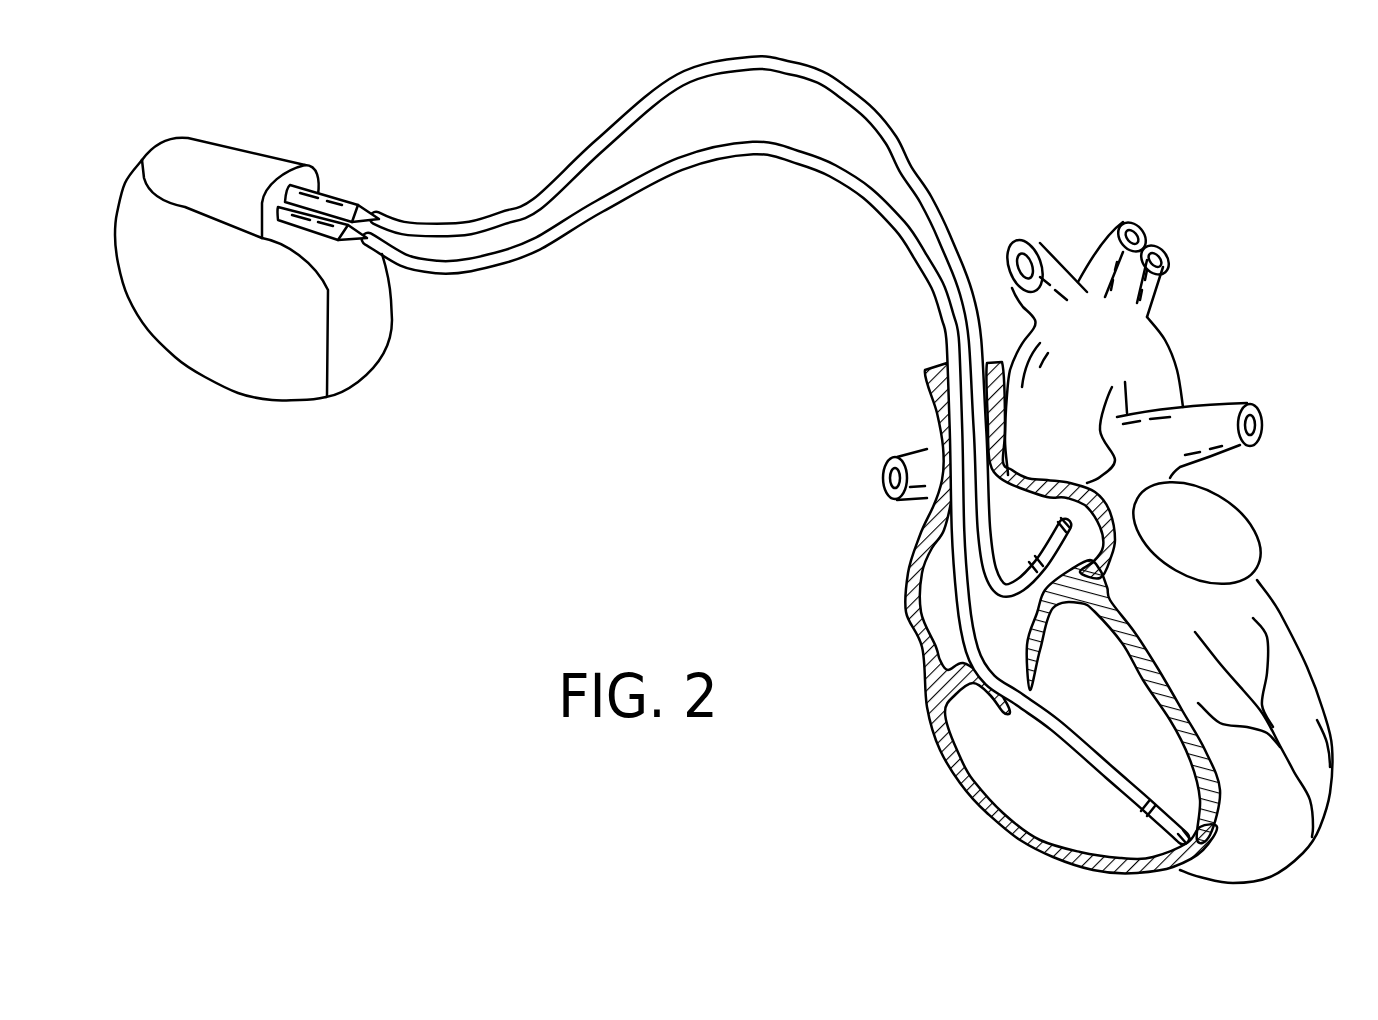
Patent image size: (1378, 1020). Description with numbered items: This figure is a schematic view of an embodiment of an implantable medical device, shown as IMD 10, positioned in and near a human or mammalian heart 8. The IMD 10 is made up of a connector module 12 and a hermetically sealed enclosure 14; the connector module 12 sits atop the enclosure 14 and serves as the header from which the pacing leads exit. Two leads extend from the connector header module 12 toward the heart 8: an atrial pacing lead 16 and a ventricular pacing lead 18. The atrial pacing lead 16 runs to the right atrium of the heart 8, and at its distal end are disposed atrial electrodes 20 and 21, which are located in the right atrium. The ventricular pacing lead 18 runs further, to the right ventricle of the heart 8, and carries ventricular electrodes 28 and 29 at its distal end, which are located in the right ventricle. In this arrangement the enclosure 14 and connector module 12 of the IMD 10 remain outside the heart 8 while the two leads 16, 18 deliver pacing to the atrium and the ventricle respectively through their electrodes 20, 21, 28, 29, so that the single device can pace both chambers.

The heart 8 is at (1287, 667).
The IMD 10 is at (282, 296).
The connector module 12 is at (252, 140).
The hermetically sealed enclosure 14 is at (283, 383).
The atrial pacing lead 16 is at (727, 310).
The ventricular pacing lead 18 is at (813, 498).
The atrial electrode 20 is at (1037, 563).
The atrial electrode 21 is at (1056, 514).
The ventricular electrode 28 is at (1147, 810).
The ventricular electrode 29 is at (1187, 847).